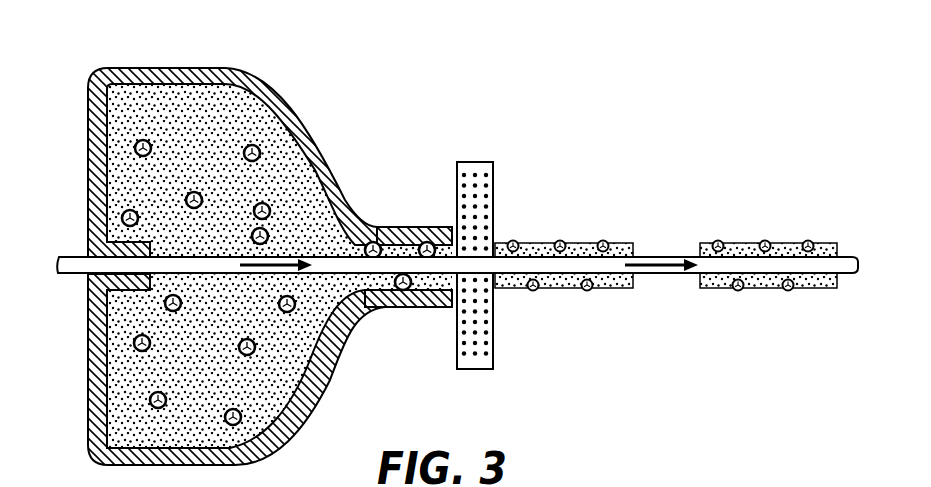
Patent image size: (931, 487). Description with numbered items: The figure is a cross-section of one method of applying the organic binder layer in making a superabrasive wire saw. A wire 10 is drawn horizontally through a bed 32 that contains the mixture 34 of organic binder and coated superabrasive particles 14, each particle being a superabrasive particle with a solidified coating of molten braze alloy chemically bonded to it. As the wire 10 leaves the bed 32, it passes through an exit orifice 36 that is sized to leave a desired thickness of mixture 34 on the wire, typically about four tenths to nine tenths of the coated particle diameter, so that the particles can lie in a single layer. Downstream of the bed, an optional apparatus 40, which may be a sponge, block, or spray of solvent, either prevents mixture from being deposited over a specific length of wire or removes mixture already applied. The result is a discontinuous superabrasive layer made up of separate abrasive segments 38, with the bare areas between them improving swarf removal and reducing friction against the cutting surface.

The wire 10 is at (70, 253).
The coated superabrasive particles 14 is at (253, 144).
The bed 32 is at (125, 68).
The mixture 34 is at (216, 100).
The exit orifice 36 is at (395, 226).
The abrasive segments 38 is at (705, 243).
The optional apparatus 40 is at (483, 162).